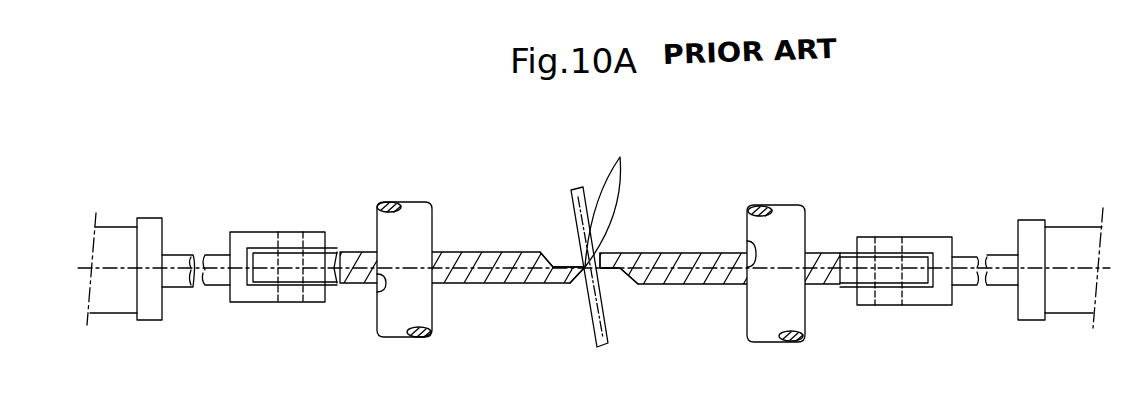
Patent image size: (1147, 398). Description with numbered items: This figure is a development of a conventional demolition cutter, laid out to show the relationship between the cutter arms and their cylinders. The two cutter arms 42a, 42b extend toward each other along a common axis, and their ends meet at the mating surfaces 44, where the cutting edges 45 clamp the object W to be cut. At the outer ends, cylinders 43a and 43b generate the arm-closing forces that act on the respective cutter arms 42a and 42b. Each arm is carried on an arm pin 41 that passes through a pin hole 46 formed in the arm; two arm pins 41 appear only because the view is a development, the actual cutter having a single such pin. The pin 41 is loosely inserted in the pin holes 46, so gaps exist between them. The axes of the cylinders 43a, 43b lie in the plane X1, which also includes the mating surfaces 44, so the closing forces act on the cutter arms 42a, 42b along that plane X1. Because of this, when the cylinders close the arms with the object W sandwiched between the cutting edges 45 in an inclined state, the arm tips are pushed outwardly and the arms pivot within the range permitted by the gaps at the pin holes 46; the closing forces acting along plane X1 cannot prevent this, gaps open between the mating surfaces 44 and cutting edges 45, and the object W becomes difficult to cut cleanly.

The arm pin 41 is at (400, 223).
The cutter arm 42a is at (510, 275).
The cutter arm 42b is at (710, 280).
The cylinder 43a is at (118, 233).
The cylinder 43b is at (1070, 237).
The mating surface 44 is at (567, 267).
The cutting edge 45 is at (615, 199).
The pin hole 46 is at (382, 283).
The object to be cut W is at (573, 183).
The plane X1 is at (455, 267).